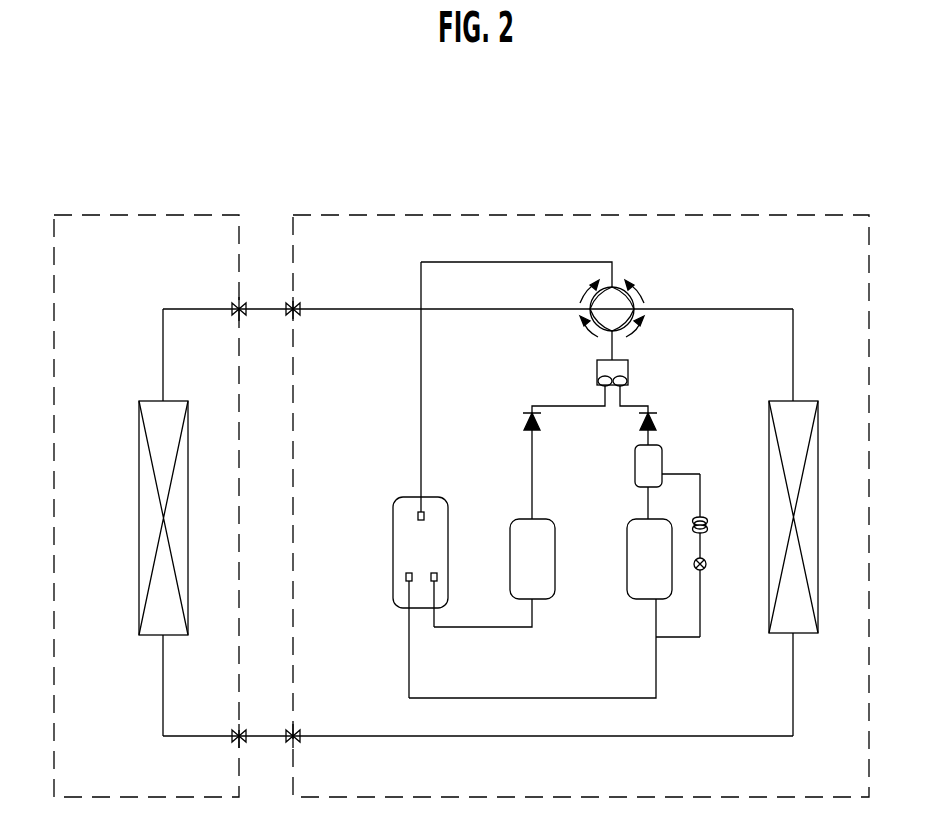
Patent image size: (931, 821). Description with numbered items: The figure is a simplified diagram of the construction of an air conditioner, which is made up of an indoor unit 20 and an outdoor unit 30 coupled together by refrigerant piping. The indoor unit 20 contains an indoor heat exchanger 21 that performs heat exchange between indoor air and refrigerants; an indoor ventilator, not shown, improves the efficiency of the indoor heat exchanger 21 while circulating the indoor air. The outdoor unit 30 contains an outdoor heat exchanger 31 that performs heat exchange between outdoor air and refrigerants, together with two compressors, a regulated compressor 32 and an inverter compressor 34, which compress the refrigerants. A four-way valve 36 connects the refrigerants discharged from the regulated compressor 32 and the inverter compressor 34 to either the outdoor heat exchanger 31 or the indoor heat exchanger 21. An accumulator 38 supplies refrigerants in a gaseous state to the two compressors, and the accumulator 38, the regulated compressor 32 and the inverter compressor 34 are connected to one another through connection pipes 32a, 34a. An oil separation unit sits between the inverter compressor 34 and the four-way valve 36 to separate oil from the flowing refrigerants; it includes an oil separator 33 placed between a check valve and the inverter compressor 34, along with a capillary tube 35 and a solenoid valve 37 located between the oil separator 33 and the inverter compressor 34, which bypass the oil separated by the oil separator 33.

The indoor unit 20 is at (146, 198).
The indoor heat exchanger 21 is at (139, 494).
The outdoor unit 30 is at (657, 205).
The outdoor heat exchanger 31 is at (804, 400).
The regulated compressor 32 is at (510, 522).
The connection pipe 32a is at (484, 627).
The oil separator 33 is at (662, 447).
The inverter compressor 34 is at (658, 520).
The connection pipe 34a is at (609, 698).
The capillary tube 35 is at (704, 517).
The 4-way valve 36 is at (614, 286).
The solenoid valve 37 is at (704, 561).
The accumulator 38 is at (398, 497).